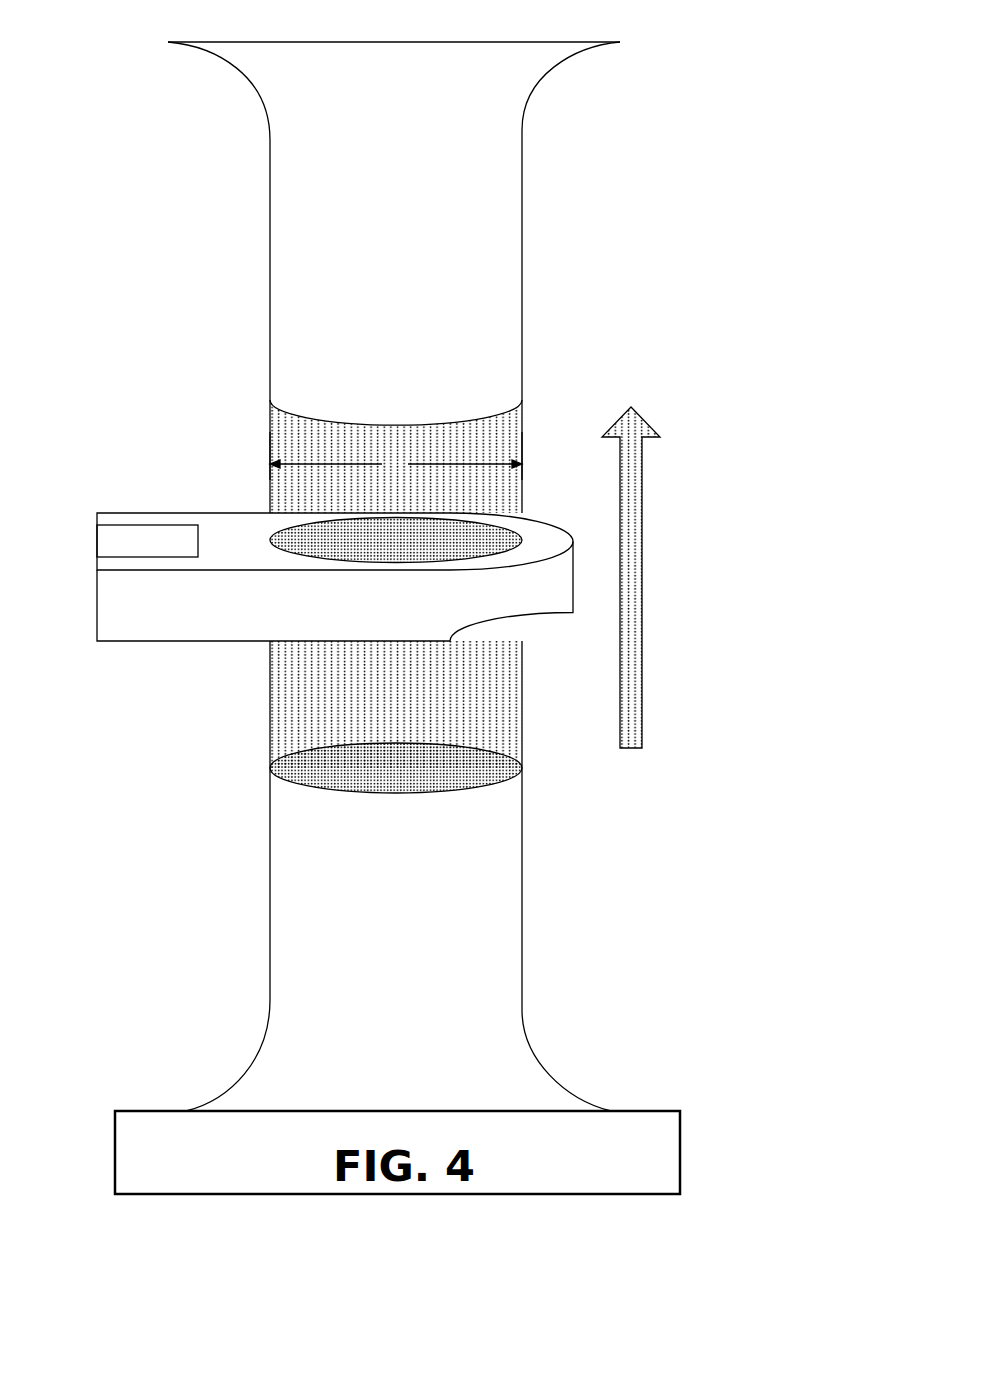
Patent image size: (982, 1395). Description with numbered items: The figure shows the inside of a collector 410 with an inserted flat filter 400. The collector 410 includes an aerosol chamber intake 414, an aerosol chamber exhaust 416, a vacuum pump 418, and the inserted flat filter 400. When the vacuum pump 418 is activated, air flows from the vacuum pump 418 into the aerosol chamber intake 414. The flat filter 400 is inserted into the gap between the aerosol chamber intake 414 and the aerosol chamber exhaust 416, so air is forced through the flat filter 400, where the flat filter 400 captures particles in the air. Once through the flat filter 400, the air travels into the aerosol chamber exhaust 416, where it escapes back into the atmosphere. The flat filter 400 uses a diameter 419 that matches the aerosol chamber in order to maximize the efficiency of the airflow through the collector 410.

The flat filter 400 is at (153, 509).
The collector 410 is at (573, 283).
The aerosol chamber intake 414 is at (271, 843).
The aerosol chamber exhaust 416 is at (269, 220).
The vacuum pump 418 is at (147, 1111).
The diameter 419 is at (267, 443).